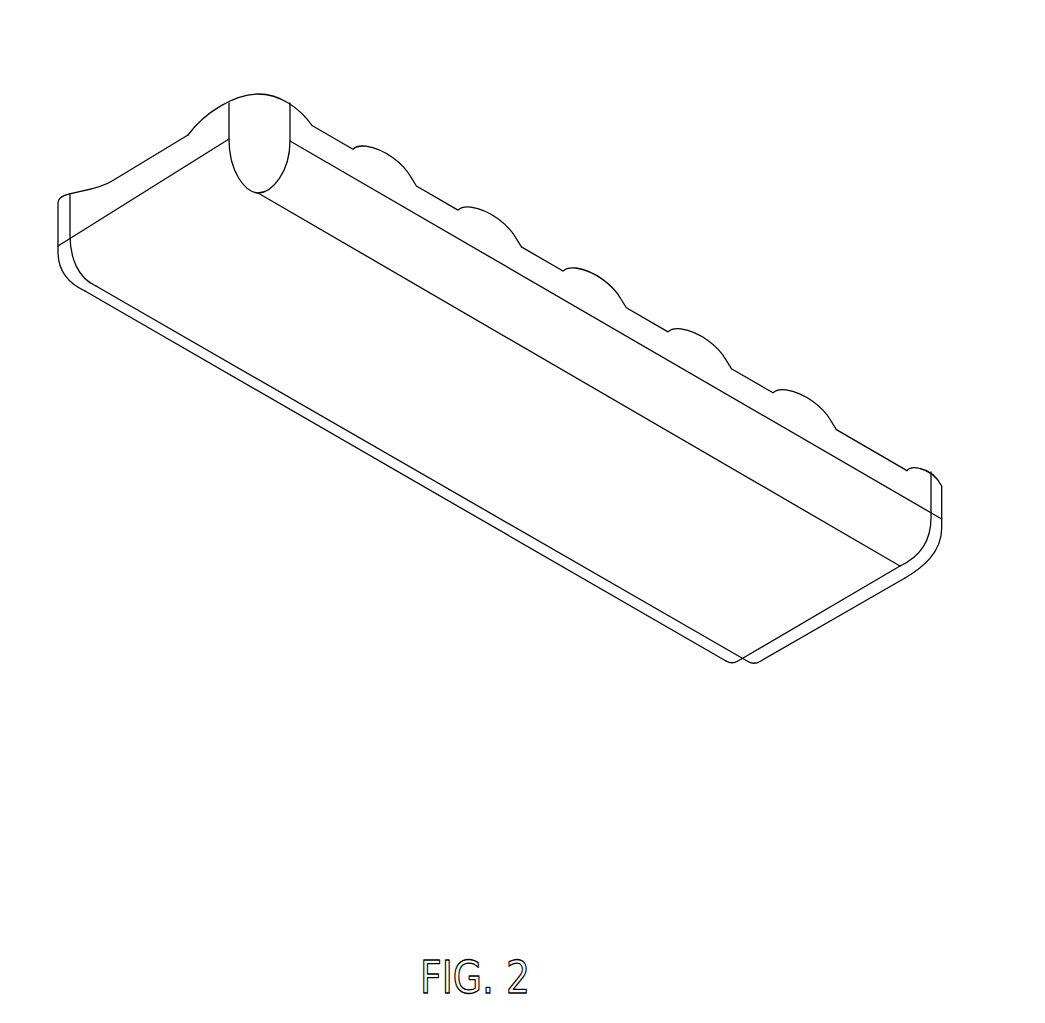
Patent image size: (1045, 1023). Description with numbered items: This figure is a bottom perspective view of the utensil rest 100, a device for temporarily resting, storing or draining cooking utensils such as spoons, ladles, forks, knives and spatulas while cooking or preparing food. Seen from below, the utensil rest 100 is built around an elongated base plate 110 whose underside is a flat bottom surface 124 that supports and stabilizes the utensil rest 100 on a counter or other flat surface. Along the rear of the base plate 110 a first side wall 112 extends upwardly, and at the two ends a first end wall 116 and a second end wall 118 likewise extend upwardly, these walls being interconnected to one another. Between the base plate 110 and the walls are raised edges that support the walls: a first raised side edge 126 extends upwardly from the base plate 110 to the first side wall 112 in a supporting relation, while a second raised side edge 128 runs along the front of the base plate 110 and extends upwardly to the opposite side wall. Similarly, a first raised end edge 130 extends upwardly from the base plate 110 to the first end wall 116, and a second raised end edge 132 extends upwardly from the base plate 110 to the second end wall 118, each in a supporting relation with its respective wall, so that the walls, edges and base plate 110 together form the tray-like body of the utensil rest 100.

The utensil rest 100 is at (488, 354).
The base plate 110 is at (130, 372).
The first side wall 112 is at (481, 235).
The first end wall 116 is at (114, 203).
The second end wall 118 is at (942, 486).
The flat bottom surface 124 is at (512, 477).
The first raised side edge 126 is at (615, 360).
The second raised side edge 128 is at (293, 413).
The first raised end edge 130 is at (145, 233).
The second raised end edge 132 is at (877, 588).